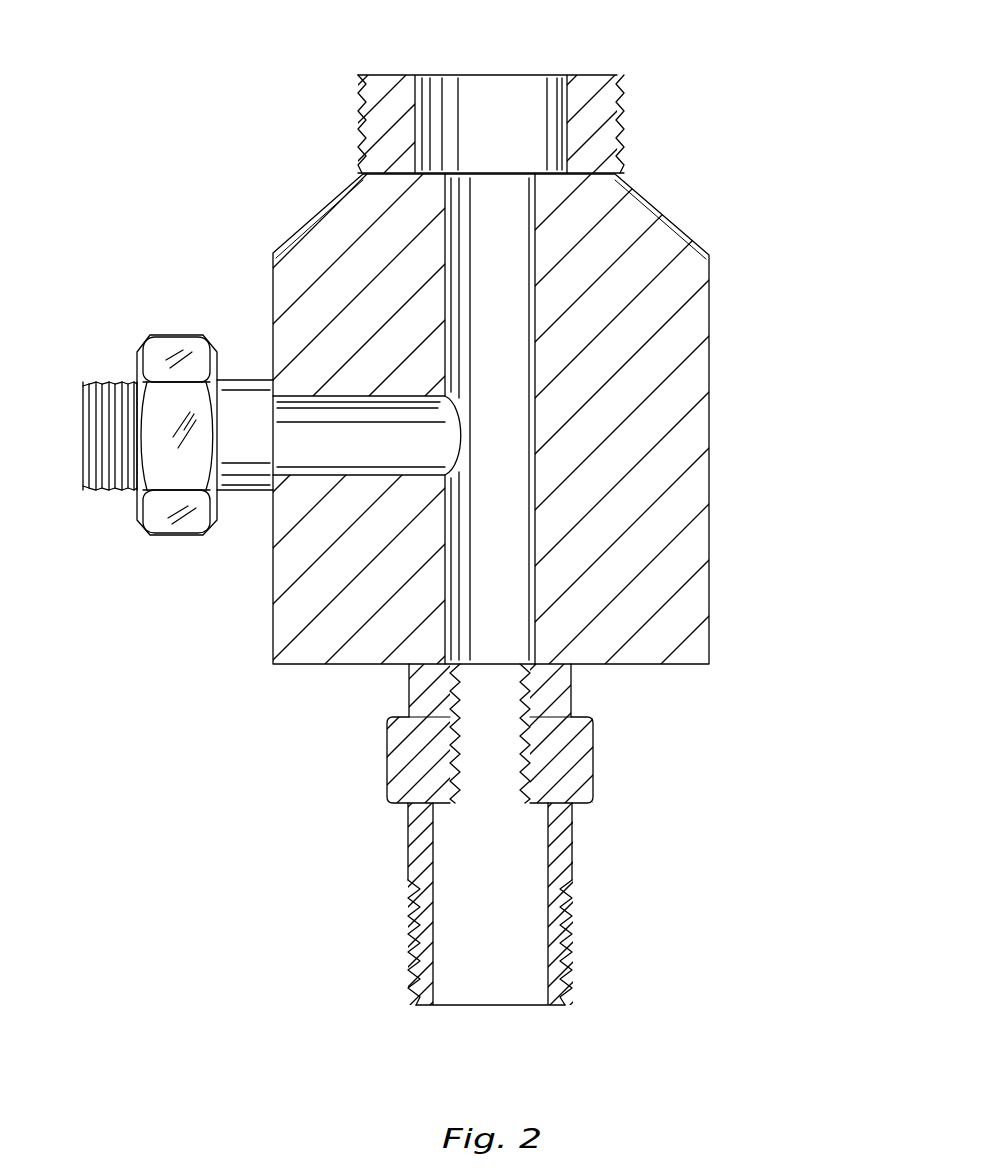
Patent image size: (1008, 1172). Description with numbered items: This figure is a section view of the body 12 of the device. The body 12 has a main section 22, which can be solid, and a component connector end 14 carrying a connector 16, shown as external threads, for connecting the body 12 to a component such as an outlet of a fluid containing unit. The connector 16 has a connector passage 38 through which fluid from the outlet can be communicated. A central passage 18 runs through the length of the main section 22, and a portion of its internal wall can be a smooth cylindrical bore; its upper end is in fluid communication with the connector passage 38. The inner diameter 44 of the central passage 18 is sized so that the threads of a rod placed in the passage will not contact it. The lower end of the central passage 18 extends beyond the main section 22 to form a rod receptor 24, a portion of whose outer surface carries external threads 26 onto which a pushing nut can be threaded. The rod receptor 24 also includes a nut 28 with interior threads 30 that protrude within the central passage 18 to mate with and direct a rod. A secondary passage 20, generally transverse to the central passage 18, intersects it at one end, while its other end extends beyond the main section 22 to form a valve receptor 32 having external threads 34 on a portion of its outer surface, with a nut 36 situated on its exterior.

The body 12 is at (768, 481).
The component connector end 14 is at (598, 73).
The connector 16 is at (623, 151).
The central passage 18 is at (540, 321).
The secondary passage 20 is at (398, 398).
The main section 22 is at (709, 264).
The rod receptor 24 is at (573, 848).
The external threads 26 is at (572, 929).
The nut 28 is at (595, 741).
The interior threads 30 is at (450, 760).
The valve receptor 32 is at (247, 490).
The external threads 34 is at (100, 382).
The nut 36 is at (173, 535).
The connector passage 38 is at (563, 105).
The inner diameter 44 is at (540, 575).